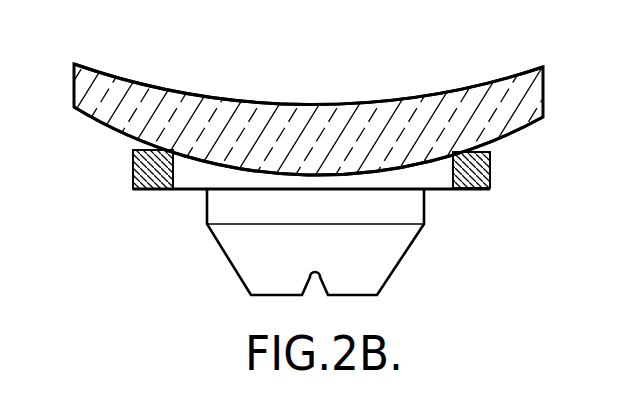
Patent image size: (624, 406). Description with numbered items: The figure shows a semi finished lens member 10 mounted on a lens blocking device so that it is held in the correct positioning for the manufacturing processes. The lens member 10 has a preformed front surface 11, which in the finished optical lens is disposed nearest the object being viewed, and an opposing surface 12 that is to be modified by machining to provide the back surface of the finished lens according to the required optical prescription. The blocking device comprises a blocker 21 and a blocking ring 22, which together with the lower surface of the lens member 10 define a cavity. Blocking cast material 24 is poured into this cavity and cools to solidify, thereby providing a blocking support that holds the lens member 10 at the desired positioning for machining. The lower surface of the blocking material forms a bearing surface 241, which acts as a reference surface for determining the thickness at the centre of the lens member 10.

The semi finished lens member 10 is at (312, 106).
The front surface 11 is at (500, 137).
The opposing surface 12 is at (448, 92).
The blocker 21 is at (382, 238).
The blocking ring 22 is at (470, 170).
The blocking cast material 24 is at (205, 168).
The bearing surface 241 is at (428, 191).